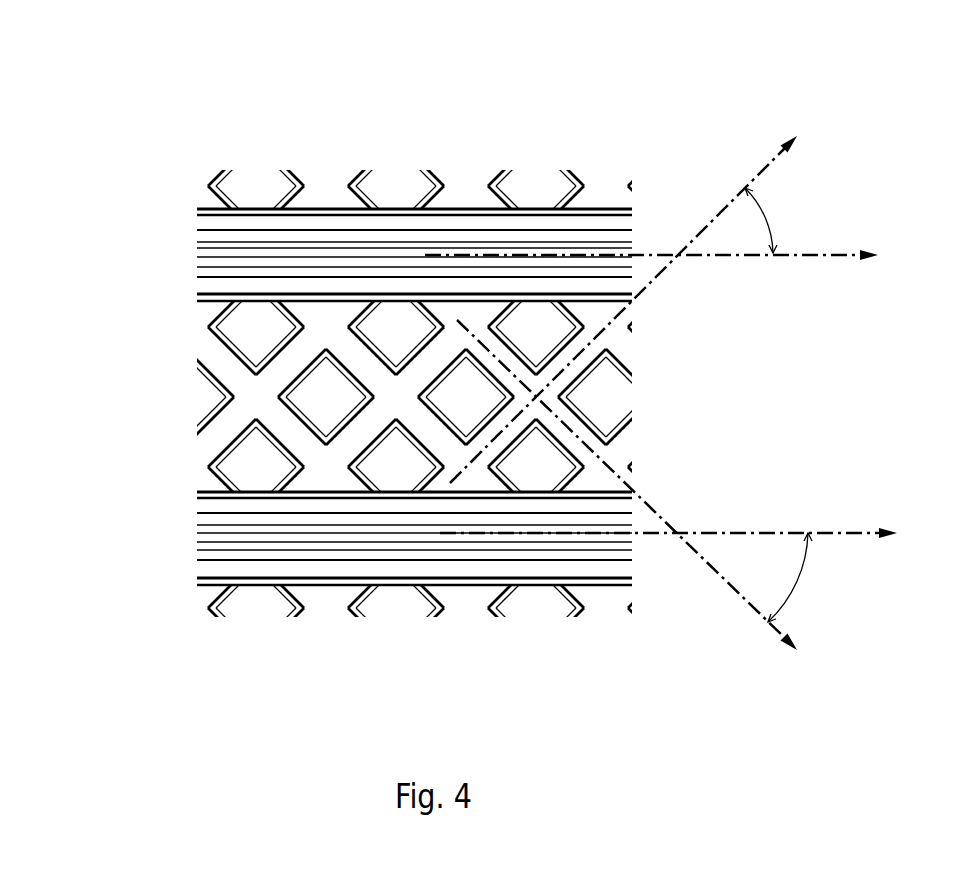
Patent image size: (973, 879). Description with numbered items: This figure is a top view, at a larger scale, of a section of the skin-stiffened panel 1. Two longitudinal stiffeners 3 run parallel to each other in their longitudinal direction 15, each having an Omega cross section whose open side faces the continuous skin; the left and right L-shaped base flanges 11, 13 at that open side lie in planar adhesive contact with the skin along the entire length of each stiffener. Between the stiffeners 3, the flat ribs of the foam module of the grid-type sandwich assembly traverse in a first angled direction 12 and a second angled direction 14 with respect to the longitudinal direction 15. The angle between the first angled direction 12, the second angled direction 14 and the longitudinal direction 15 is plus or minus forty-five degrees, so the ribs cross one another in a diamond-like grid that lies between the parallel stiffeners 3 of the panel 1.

The skin-stiffened panel 1 is at (176, 143).
The longitudinal stiffeners 3 is at (183, 262).
The left L-shaped base flange 11 is at (575, 364).
The first angled direction 12 is at (784, 127).
The right L-shaped base flange 13 is at (580, 431).
The second angled direction 14 is at (780, 652).
The longitudinal direction 15 is at (875, 245).